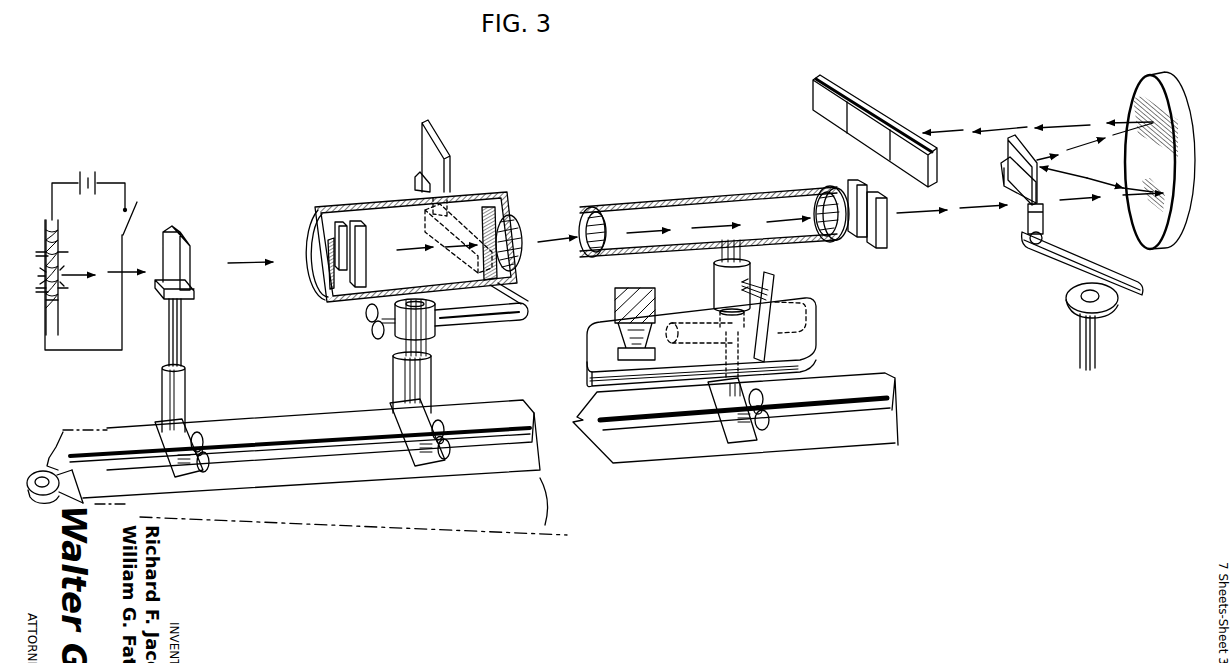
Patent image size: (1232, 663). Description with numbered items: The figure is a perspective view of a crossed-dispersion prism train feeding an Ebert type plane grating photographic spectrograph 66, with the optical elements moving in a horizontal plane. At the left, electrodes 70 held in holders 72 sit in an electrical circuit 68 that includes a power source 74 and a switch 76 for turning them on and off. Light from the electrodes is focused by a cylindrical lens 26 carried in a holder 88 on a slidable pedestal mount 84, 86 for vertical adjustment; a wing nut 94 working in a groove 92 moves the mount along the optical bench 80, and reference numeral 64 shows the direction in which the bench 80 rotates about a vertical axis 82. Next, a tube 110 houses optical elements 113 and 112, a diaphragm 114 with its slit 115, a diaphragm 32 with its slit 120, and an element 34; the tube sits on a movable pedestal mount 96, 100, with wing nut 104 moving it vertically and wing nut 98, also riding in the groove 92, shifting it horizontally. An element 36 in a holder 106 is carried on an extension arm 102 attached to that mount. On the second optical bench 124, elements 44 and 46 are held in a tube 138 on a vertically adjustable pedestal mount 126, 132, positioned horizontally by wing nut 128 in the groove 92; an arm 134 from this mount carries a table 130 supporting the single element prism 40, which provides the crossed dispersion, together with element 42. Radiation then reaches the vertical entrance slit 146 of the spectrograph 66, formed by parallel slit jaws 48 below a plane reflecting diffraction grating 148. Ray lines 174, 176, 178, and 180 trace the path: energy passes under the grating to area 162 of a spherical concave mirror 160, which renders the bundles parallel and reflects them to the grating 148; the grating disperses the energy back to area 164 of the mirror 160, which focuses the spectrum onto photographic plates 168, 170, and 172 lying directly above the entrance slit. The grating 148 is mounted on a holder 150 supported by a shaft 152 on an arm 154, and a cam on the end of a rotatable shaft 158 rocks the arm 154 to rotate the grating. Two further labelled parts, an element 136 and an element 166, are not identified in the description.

The cylindrical lens 26 is at (188, 249).
The diaphragm 32 is at (512, 271).
The optical element 34 is at (517, 222).
The optical element 36 is at (452, 170).
The single element prism 40 is at (612, 308).
The optical element 42 is at (776, 299).
The optical element 44 is at (600, 210).
The optical element 46 is at (826, 188).
The slit jaws 48 is at (888, 233).
The direction of rotation 64 is at (575, 538).
The plane grating photographic spectrometer 66 is at (1048, 95).
The electrical circuit 68 is at (100, 362).
The electrodes 70 is at (58, 326).
The holders 72 is at (60, 306).
The power source 74 is at (95, 183).
The switch 76 is at (133, 221).
The optical bench 80 is at (294, 460).
The vertical axis 82 is at (42, 478).
The pedestal mount 84 is at (186, 387).
The pedestal mount 86 is at (182, 335).
The holder 88 is at (192, 291).
The groove 92 is at (287, 440).
The wing nut 94 is at (200, 440).
The pedestal mount 96 is at (432, 385).
The wing nut 98 is at (445, 430).
The pedestal mount 100 is at (436, 345).
The extension arm 102 is at (510, 322).
The wing nut 104 is at (370, 324).
The holder 106 is at (445, 189).
The tube 110 is at (340, 208).
The optical element 112 is at (322, 270).
The optical element 113 is at (326, 245).
The diaphragm 114 is at (367, 271).
The slit 115 is at (348, 231).
The slit 120 is at (470, 225).
The optical bench 124 is at (813, 438).
The pedestal mount 126 is at (740, 389).
The wing nut 128 is at (766, 394).
The table 130 is at (800, 331).
The pedestal mount 132 is at (722, 304).
The arm 134 is at (790, 320).
The hub 136 is at (1115, 319).
The tube 138 is at (735, 207).
The entrance slit 146 is at (868, 190).
The diffraction grating 148 is at (1030, 151).
The holder 150 is at (1020, 206).
The shaft 152 is at (1044, 220).
The arm 154 is at (1060, 257).
The rotatable shaft 158 is at (1098, 360).
The spherical concave mirror 160 is at (1190, 168).
The mirror area 162 is at (1167, 203).
The mirror area 164 is at (1170, 132).
The filter bar 166 is at (875, 118).
The photographic plate 168 is at (847, 97).
The photographic plate 170 is at (870, 104).
The photographic plate 172 is at (908, 136).
The ray line 174 is at (248, 262).
The ray line 176 is at (1094, 178).
The ray line 178 is at (1100, 140).
The ray line 180 is at (1067, 124).